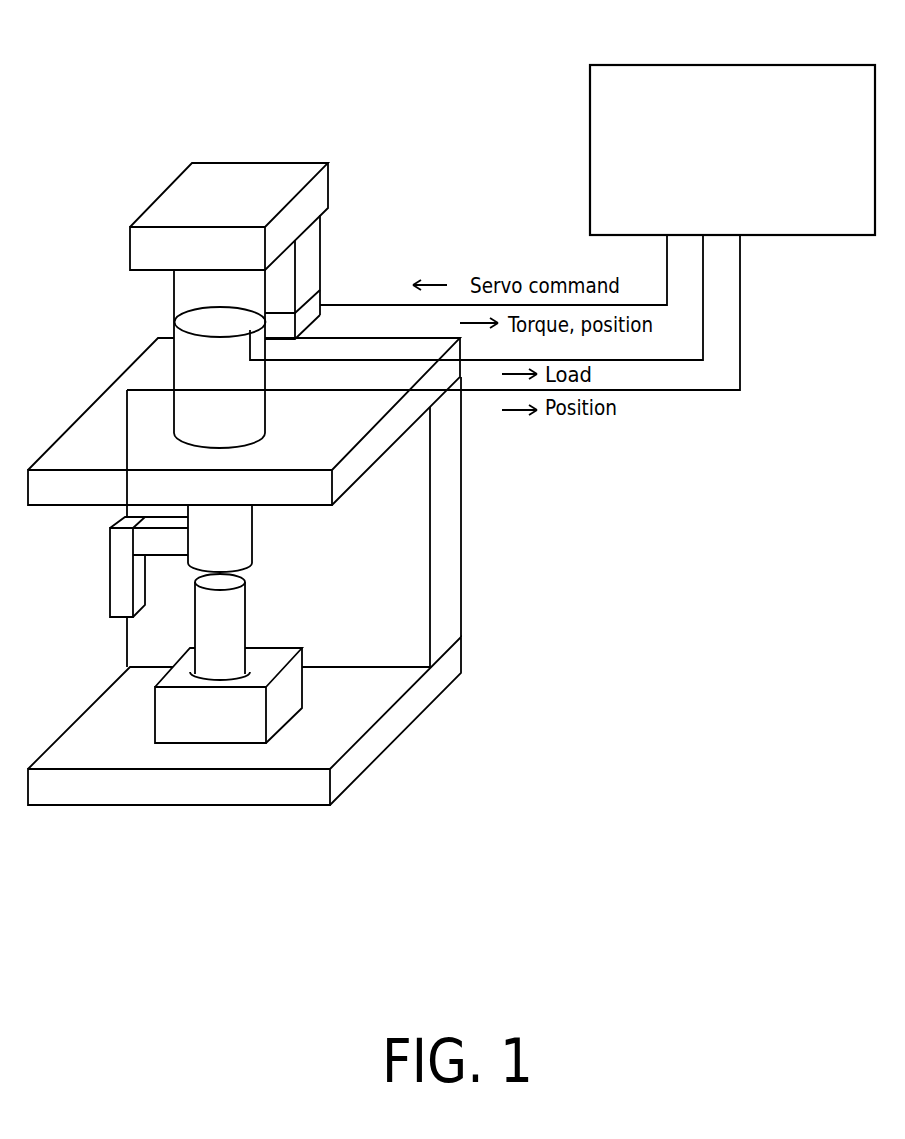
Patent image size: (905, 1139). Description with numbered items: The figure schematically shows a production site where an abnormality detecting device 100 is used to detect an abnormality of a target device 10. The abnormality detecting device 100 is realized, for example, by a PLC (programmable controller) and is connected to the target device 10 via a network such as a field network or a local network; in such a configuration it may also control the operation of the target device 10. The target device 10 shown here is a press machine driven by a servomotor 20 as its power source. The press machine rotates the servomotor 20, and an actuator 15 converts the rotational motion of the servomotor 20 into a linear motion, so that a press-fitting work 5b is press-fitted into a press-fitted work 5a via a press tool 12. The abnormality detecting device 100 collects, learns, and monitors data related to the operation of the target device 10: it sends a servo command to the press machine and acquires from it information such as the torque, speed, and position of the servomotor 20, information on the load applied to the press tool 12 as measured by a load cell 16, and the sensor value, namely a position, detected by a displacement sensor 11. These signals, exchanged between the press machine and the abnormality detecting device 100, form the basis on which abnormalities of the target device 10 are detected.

The abnormality detecting device 100 is at (818, 64).
The target device 10 is at (213, 835).
The actuator 15 is at (218, 193).
The servomotor 20 is at (320, 240).
The load cell 16 is at (205, 317).
The press tool 12 is at (220, 540).
The displacement sensor 11 is at (122, 560).
The press-fitted work 5a is at (285, 685).
The press-fitting work 5b is at (228, 625).